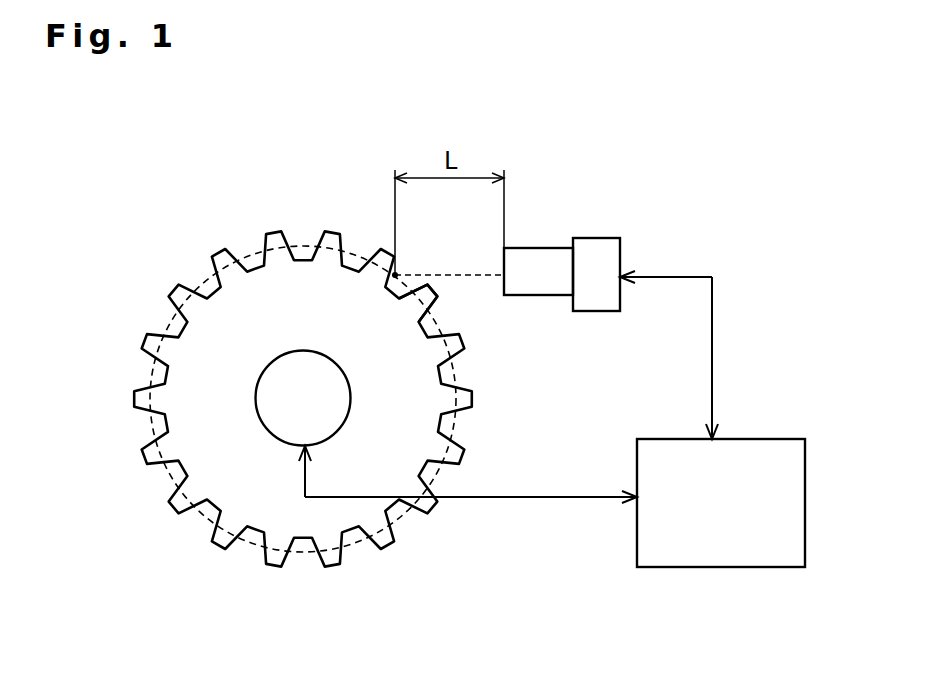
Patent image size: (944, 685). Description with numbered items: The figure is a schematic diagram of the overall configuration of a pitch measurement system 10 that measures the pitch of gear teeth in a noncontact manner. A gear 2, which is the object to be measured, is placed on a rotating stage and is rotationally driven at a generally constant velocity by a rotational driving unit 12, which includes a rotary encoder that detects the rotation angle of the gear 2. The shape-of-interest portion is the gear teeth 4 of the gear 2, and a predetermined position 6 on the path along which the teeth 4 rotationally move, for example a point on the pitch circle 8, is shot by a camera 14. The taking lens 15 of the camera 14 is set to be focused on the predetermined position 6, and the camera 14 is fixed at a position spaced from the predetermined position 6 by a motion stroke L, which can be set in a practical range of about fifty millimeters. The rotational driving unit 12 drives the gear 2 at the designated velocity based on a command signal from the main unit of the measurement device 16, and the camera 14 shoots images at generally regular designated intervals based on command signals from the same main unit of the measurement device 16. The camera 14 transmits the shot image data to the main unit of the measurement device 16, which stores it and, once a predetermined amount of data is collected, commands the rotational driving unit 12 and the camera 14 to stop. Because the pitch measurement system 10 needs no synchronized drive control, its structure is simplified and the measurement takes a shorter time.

The gear 2 is at (220, 250).
The gear teeth 4 is at (438, 307).
The predetermined position 6 is at (397, 274).
The pitch circle 8 is at (300, 244).
The pitch measurement system 10 is at (733, 245).
The rotational driving unit 12 is at (302, 350).
The camera 14 is at (592, 238).
The taking lens 15 is at (540, 248).
The main unit of the measurement device 16 is at (780, 439).